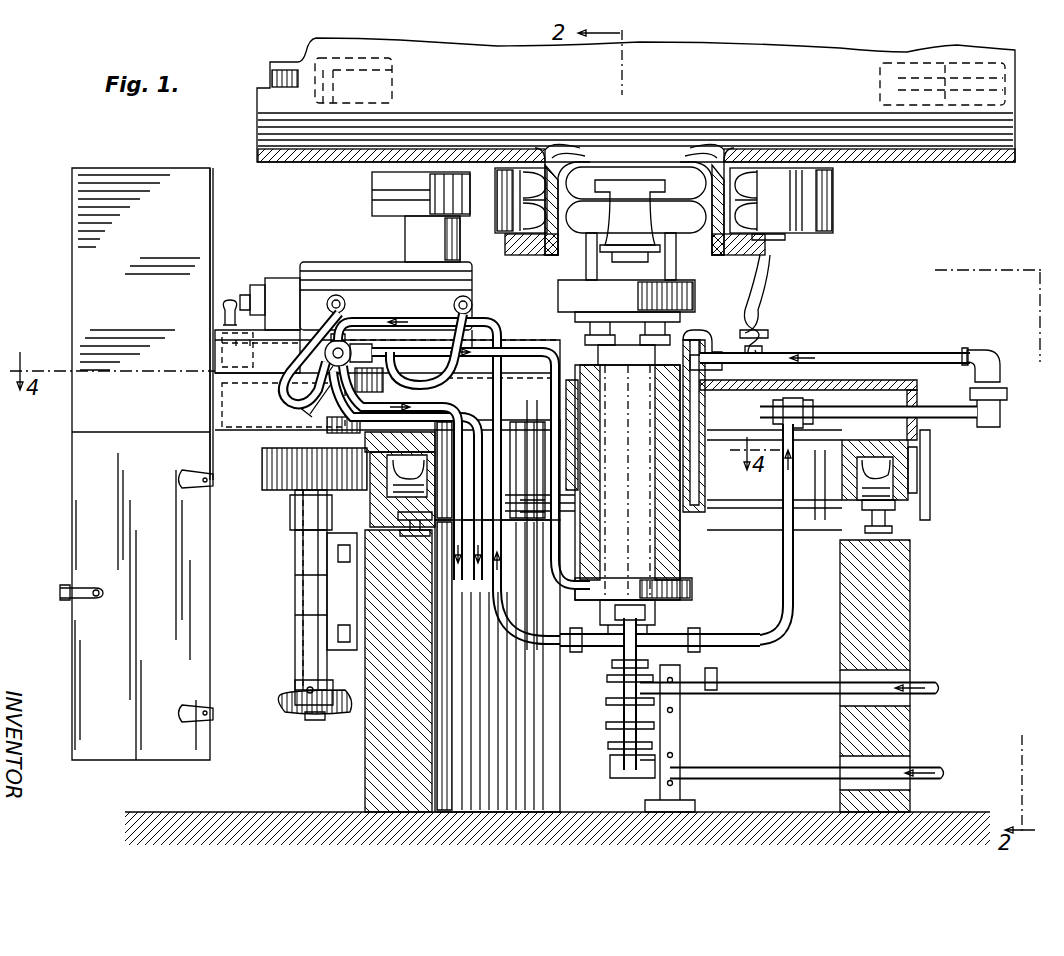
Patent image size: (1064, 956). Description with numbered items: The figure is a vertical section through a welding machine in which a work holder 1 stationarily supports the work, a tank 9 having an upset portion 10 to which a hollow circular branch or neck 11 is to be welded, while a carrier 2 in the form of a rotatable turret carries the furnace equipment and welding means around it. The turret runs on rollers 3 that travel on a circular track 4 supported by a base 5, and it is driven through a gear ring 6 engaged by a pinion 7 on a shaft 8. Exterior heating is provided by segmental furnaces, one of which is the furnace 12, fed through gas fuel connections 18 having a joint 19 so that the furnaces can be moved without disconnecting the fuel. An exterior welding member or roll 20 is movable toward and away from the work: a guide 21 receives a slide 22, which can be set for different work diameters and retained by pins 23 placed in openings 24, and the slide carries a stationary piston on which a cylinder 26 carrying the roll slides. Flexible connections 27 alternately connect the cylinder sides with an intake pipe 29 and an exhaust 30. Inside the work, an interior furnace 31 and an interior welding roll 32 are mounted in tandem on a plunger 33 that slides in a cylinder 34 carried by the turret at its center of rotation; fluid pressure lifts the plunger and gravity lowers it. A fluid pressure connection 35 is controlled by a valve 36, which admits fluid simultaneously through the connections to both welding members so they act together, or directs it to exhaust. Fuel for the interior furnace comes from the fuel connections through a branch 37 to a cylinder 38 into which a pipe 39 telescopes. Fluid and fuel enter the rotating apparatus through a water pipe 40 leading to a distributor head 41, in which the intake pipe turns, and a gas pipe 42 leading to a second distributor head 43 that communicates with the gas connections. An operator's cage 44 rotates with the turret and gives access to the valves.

The work holder 1 is at (270, 77).
The carrier 2 is at (928, 455).
The rollers 3 is at (388, 502).
The circular track 4 is at (380, 528).
The base 5 is at (365, 768).
The gear ring 6 is at (920, 485).
The pinion 7 is at (262, 490).
The shaft 8 is at (295, 590).
The tank 9 is at (636, 100).
The upset portion 10 is at (570, 148).
The hollow branch or neck 11 is at (720, 240).
The furnace 12 is at (834, 205).
The fuel connections 18 is at (932, 418).
The joint 19 is at (987, 350).
The exterior welding member or roll 20 is at (372, 192).
The guide 21 is at (552, 348).
The slide 22 is at (270, 283).
The pins 23 is at (230, 298).
The openings 24 is at (293, 373).
The cylinder 26 is at (460, 296).
The flexible connections 27 is at (330, 296).
The intake pipe 29 is at (490, 320).
The exhaust 30 is at (470, 570).
The interior furnace 31 is at (650, 185).
The interior welding roll 32 is at (680, 300).
The plunger 33 is at (623, 500).
The cylinder 34 is at (680, 552).
The fluid pressure connection 35 is at (556, 580).
The valve 36 is at (298, 418).
The branch 37 is at (762, 372).
The cylinder 38 is at (700, 480).
The pipe 39 is at (711, 350).
The water pipe 40 is at (793, 775).
The distributor head 41 is at (618, 775).
The gas pipe 42 is at (770, 678).
The distributor head 43 is at (612, 685).
The operator's cage 44 is at (95, 474).